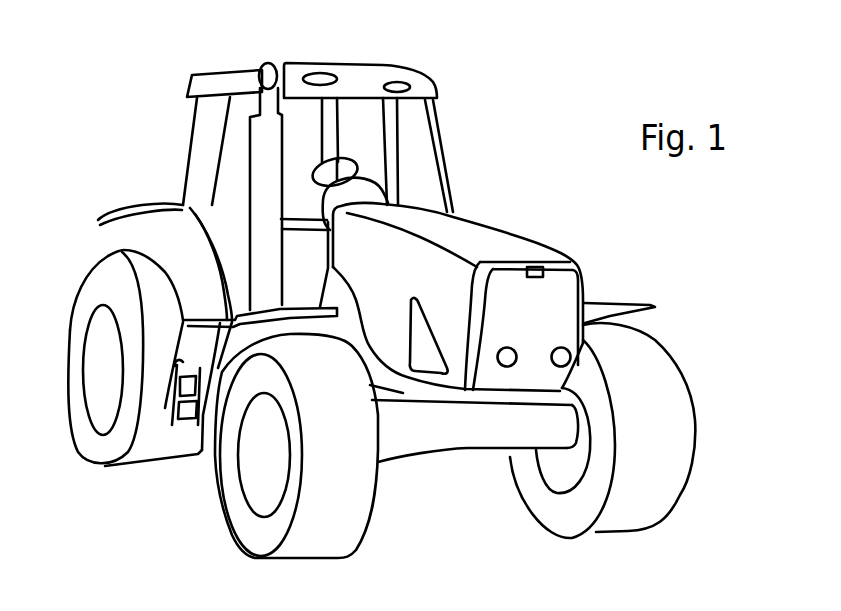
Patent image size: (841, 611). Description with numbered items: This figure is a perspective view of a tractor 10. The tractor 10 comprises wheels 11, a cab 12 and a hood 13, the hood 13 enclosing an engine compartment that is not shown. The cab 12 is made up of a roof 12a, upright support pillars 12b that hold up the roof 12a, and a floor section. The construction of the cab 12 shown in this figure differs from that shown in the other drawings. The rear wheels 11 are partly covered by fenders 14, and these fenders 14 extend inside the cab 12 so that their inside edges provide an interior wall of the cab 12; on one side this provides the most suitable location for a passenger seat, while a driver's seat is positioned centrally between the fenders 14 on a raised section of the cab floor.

The tractor 10 is at (90, 69).
The wheels 11 is at (143, 449).
The cab 12 is at (217, 85).
The roof 12a is at (405, 68).
The upright support pillars 12b is at (204, 131).
The hood 13 is at (518, 236).
The fenders 14 is at (126, 210).